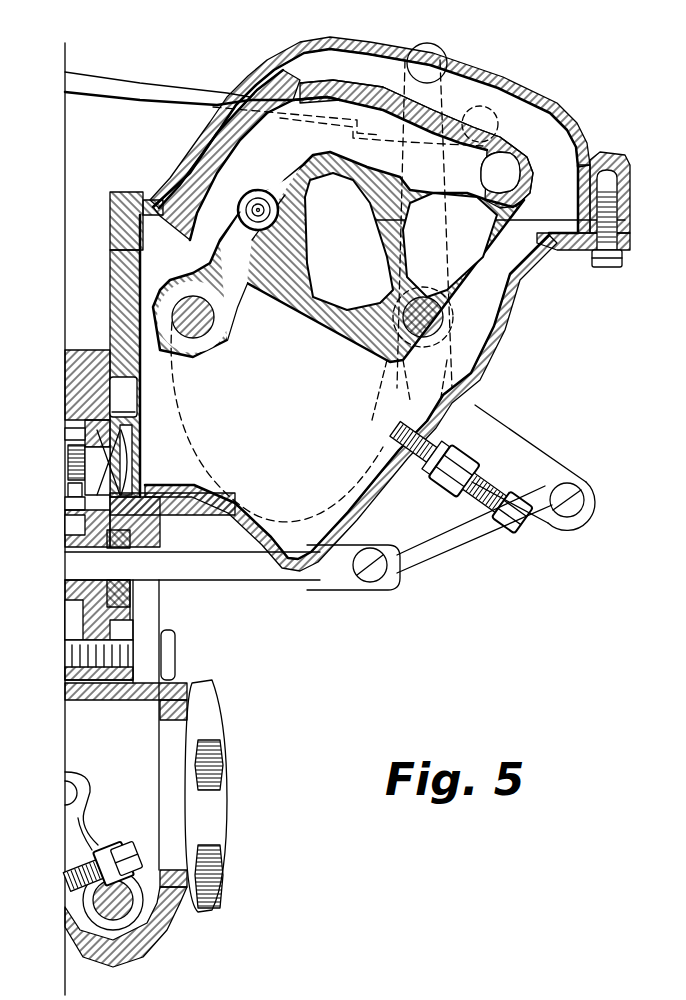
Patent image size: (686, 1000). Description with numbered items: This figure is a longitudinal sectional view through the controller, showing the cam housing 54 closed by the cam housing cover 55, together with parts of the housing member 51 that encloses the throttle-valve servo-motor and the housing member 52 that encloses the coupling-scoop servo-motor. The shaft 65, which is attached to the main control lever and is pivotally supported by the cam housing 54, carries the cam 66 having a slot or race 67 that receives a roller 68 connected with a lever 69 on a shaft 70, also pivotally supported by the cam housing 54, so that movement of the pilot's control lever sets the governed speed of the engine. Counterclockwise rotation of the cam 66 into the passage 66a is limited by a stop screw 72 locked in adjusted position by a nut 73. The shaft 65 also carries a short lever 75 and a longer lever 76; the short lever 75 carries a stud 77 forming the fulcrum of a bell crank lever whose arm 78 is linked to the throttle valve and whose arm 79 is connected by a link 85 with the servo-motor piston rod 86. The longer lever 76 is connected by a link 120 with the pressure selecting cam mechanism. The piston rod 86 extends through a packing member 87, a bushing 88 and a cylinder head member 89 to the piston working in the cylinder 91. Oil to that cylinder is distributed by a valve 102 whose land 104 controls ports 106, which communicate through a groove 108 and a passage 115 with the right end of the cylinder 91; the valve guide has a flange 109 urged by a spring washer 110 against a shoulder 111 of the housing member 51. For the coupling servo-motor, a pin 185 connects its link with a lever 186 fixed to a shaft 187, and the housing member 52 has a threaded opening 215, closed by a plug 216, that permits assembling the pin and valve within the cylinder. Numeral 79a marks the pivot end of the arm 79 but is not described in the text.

The housing member 51 is at (100, 348).
The housing member 52 is at (66, 928).
The cam housing 54 is at (512, 320).
The cam housing cover 55 is at (305, 44).
The shaft 65 is at (382, 345).
The cam 66 is at (537, 160).
The passage 66a is at (208, 465).
The slot or race 67 is at (515, 177).
The roller 68 is at (262, 190).
The lever 69 is at (238, 302).
The shaft 70 is at (210, 330).
The stop screw 72 is at (398, 439).
The nut 73 is at (462, 506).
The short lever 75 is at (445, 337).
The longer lever 76 is at (499, 118).
The stud 77 is at (385, 392).
The arm 78 is at (437, 58).
The arm (lever) 79 is at (505, 424).
The lever pivot 79a is at (586, 504).
The link 85 is at (463, 543).
The servo-motor piston rod 86 is at (250, 580).
The packing member 87 is at (131, 540).
The bushing 88 is at (65, 588).
The cylinder head member 89 is at (80, 520).
The cylinder 91 is at (66, 638).
The valve 102 is at (67, 490).
The land 104 is at (67, 460).
The ports 106 is at (92, 428).
The groove 108 is at (66, 432).
The flange 109 is at (133, 410).
The spring washer 110 is at (133, 440).
The shoulder 111 is at (132, 384).
The passage 115 is at (66, 504).
The link 120 is at (162, 86).
The pin 185 is at (65, 795).
The lever 186 is at (81, 856).
The shaft 187 is at (93, 903).
The threaded opening 215 is at (185, 892).
The plug 216 is at (226, 860).